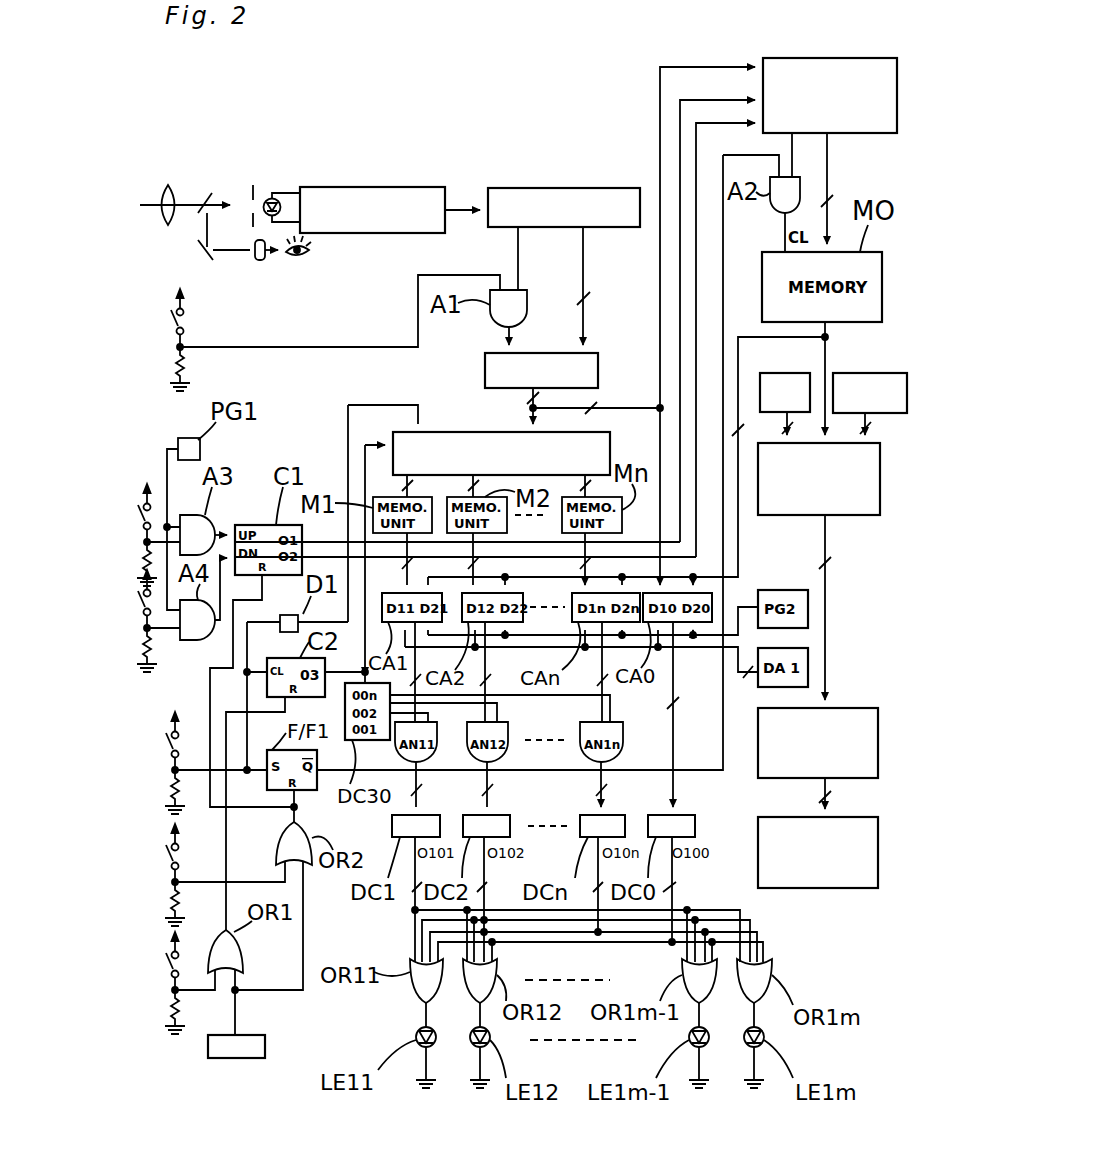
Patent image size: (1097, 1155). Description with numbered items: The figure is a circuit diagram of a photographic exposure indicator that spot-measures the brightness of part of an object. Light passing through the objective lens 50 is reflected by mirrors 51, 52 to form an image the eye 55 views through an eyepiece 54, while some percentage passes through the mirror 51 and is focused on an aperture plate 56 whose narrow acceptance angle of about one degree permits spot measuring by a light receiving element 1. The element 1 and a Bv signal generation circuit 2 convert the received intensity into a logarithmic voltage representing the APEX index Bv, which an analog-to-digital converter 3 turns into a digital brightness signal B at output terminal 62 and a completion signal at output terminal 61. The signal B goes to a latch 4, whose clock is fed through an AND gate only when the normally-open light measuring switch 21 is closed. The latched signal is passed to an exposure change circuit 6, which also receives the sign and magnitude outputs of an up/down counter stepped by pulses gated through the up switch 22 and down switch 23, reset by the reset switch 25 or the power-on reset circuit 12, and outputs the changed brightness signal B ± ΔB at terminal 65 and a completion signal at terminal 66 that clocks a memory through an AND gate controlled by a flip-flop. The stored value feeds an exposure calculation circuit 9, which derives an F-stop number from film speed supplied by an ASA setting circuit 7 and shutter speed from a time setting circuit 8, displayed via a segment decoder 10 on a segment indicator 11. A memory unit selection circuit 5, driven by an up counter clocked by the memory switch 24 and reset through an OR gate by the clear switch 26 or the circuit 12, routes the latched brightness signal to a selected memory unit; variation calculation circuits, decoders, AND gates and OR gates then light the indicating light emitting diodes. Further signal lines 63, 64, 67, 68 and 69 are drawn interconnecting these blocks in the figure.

The light receiving element 1 is at (275, 198).
The Bv signal generation circuit 2 is at (373, 187).
The analog-to-digital converter 3 is at (548, 188).
The latch 4 is at (598, 358).
The memory unit selection circuit 5 is at (598, 432).
The exposure change circuit 6 is at (835, 58).
The ASA setting circuit 7 is at (772, 374).
The time setting circuit 8 is at (862, 374).
The exposure calculation circuit 9 is at (845, 515).
The segment decoder 10 is at (853, 708).
The segment indicator 11 is at (843, 888).
The power-on reset circuit 12 is at (243, 1058).
The light measuring switch 21 is at (176, 340).
The up switch 22 is at (143, 517).
The down switch 23 is at (139, 633).
The memory switch 24 is at (170, 765).
The reset switch 25 is at (170, 873).
The clear switch 26 is at (170, 982).
The objective lens 50 is at (168, 185).
The mirror 51 is at (207, 193).
The mirror 52 is at (205, 250).
The eyepiece 54 is at (262, 260).
The eye 55 is at (305, 253).
The aperture plate 56 is at (253, 185).
The output terminal 61 is at (534, 258).
The output terminal 62 is at (596, 286).
The signal line 63 is at (717, 308).
The signal line 64 is at (725, 329).
The terminal 65 is at (852, 188).
The terminal 66 is at (807, 155).
The data line 67 is at (595, 405).
The signal line 68 is at (548, 462).
The data line 69 is at (688, 714).